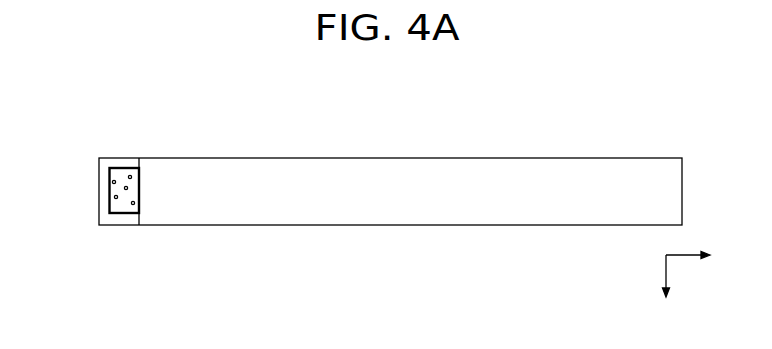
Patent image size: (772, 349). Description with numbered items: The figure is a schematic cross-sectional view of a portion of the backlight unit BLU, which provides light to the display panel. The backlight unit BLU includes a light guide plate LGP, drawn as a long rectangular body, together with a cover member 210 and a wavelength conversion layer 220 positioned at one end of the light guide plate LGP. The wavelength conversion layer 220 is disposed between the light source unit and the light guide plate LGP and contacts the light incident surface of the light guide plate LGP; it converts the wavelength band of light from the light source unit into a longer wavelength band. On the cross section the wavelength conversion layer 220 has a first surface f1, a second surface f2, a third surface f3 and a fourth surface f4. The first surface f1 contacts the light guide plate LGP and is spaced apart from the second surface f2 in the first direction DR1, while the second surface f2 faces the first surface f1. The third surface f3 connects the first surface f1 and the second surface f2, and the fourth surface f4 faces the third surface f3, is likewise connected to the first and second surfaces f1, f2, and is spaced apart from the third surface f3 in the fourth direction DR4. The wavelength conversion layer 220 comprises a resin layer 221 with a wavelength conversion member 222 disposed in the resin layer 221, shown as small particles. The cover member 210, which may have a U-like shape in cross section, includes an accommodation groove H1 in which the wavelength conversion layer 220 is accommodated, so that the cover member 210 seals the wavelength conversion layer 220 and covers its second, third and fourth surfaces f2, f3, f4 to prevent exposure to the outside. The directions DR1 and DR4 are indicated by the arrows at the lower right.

The backlight unit BLU is at (357, 192).
The light guide plate LGP is at (287, 215).
The cover member 210 is at (109, 172).
The wavelength conversion layer 220 is at (128, 240).
The resin layer 221 is at (127, 207).
The wavelength conversion member 222 is at (135, 204).
The first surface f1 is at (140, 181).
The second surface f2 is at (109, 192).
The third surface f3 is at (126, 168).
The fourth surface f4 is at (110, 214).
The accommodation groove H1 is at (140, 192).
The first direction DR1 is at (703, 256).
The fourth direction DR4 is at (666, 288).